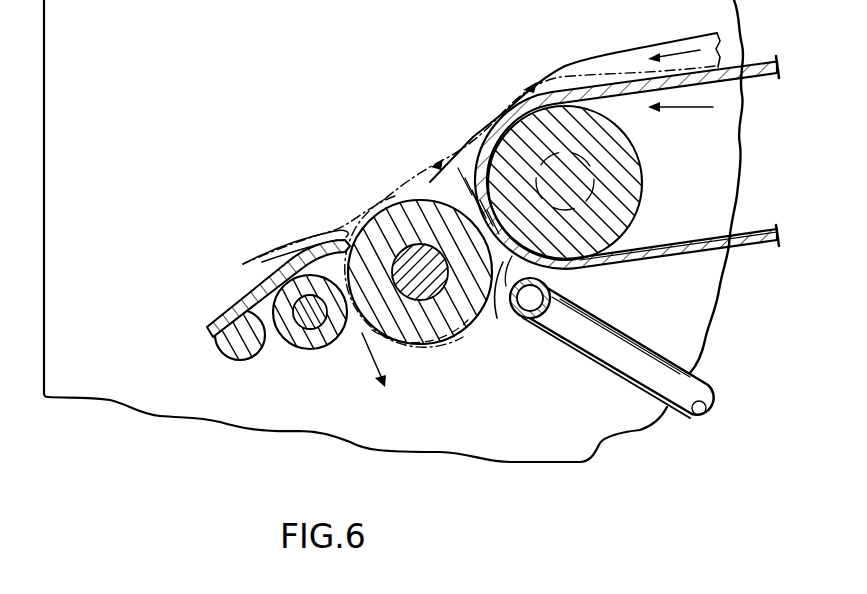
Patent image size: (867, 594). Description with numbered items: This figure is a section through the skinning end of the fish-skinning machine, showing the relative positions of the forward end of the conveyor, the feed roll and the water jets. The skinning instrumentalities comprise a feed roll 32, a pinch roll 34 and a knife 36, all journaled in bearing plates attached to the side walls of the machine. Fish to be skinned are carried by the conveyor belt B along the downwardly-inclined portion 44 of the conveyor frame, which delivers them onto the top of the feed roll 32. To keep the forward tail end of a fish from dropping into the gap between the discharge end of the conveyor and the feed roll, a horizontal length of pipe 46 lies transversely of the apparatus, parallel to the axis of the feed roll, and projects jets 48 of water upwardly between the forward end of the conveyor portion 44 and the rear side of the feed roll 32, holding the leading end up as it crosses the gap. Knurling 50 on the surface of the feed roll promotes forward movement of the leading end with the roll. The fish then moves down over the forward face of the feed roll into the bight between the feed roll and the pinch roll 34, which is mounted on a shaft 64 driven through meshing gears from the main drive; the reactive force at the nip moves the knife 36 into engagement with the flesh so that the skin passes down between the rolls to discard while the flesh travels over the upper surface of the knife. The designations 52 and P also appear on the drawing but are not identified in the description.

The feed roll 32 is at (450, 330).
The pinch roll 34 is at (325, 344).
The knife 36 is at (278, 300).
The downwardly-inclined portion 44 is at (760, 61).
The horizontal length of pipe 46 is at (540, 300).
The jets of water 48 is at (496, 298).
The knurling 50 is at (688, 383).
The roller surface layer 52 is at (418, 346).
The shaft 64 is at (290, 340).
The conveyor belt B is at (752, 230).
The paper sheet path P is at (718, 410).